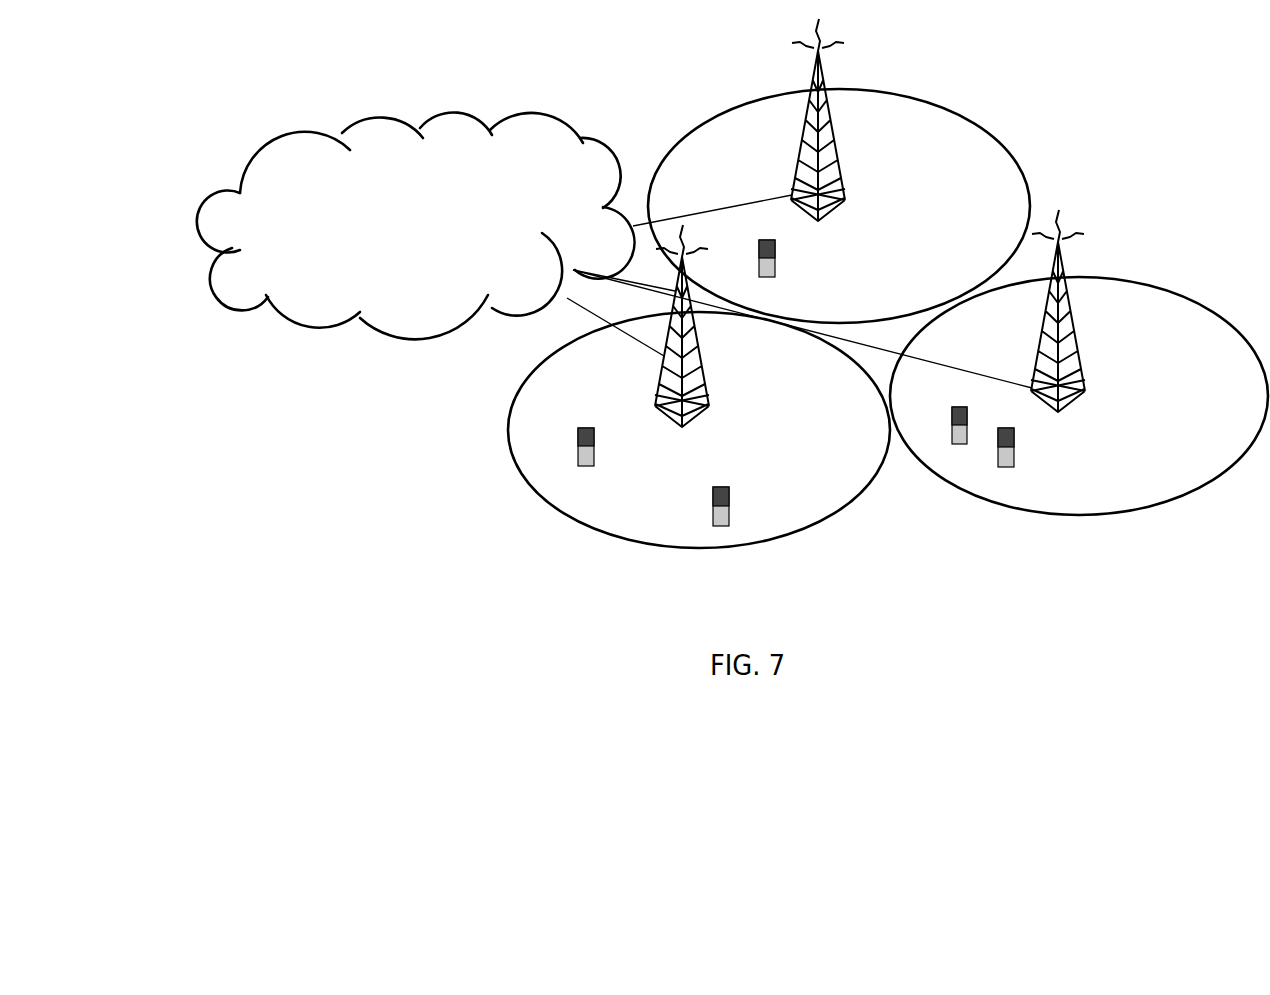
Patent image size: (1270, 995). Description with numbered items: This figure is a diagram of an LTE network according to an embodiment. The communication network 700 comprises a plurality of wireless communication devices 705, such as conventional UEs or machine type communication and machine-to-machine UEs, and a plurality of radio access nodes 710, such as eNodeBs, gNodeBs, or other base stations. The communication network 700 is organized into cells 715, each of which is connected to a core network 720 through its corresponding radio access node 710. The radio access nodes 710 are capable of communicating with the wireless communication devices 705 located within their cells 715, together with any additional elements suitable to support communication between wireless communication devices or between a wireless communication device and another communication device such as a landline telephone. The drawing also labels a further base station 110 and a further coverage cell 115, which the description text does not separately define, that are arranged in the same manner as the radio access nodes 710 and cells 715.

The communication network 700 is at (1139, 84).
The wireless communication devices 705 is at (824, 383).
The radio access nodes 710 is at (772, 223).
The base station 110 is at (1083, 311).
The cells 715 is at (958, 294).
The coverage area 115 is at (699, 434).
The core network 720 is at (416, 225).